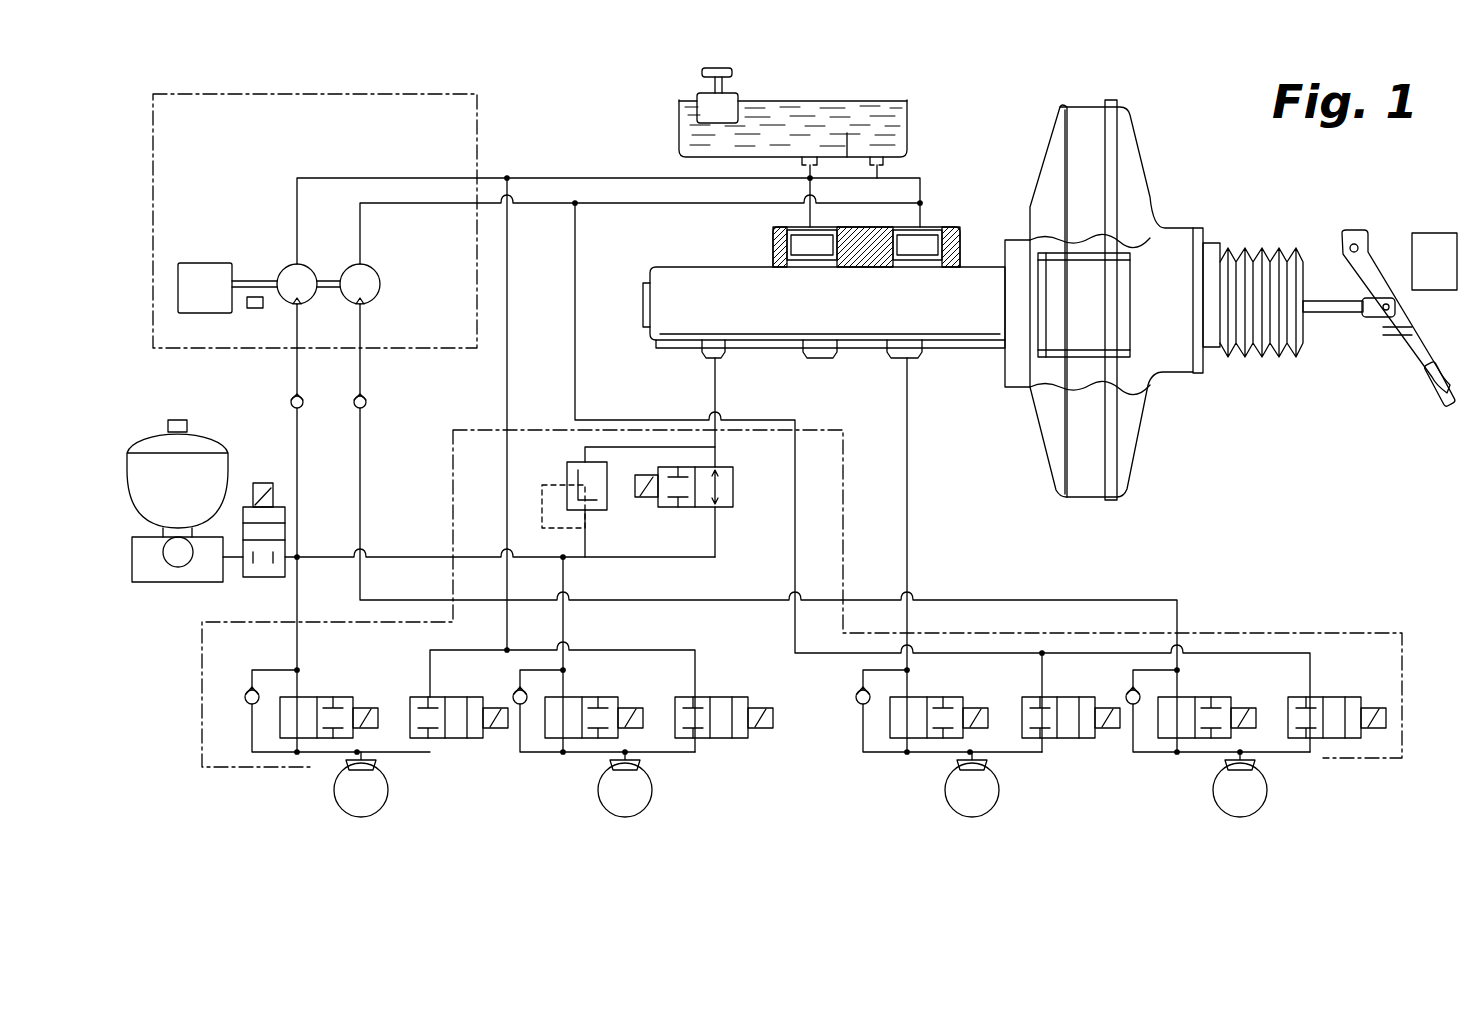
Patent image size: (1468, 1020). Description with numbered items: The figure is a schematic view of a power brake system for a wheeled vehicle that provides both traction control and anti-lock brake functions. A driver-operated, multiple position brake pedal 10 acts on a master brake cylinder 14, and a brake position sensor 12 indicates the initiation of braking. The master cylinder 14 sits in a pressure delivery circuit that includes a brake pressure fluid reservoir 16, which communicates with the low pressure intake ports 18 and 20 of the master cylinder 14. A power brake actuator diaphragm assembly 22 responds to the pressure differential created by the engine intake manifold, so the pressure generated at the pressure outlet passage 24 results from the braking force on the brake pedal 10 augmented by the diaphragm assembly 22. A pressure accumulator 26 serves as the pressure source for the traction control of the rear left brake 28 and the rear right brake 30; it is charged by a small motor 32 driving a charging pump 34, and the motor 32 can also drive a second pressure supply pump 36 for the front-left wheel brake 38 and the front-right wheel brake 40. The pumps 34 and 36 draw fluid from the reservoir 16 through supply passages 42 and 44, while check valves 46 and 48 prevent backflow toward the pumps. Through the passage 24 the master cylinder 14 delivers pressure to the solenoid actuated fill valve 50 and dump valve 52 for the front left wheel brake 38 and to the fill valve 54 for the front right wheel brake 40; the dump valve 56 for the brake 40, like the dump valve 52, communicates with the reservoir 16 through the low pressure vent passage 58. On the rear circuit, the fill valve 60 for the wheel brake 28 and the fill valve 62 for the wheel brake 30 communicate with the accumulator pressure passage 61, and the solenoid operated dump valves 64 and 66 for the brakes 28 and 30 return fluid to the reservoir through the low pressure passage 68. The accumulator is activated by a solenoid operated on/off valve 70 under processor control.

The brake pedal 10 is at (1415, 362).
The brake position sensor 12 is at (1422, 233).
The master brake cylinder 14 is at (960, 228).
The brake pressure fluid reservoir 16 is at (910, 112).
The low pressure intake port 18 is at (900, 238).
The low pressure intake port 20 is at (786, 244).
The power brake actuator diaphragm assembly 22 is at (1100, 142).
The pressure outlet passage 24 is at (908, 427).
The pressure accumulator 26 is at (222, 462).
The rear left brake 28 is at (356, 805).
The rear right brake 30 is at (612, 808).
The motor 32 is at (222, 262).
The charging pump 34 is at (304, 277).
The second pressure supply pump 36 is at (370, 276).
The front-left wheel brake 38 is at (962, 810).
The front-right wheel brake 40 is at (1232, 810).
The supply passage 42 is at (380, 178).
The supply passage 44 is at (450, 205).
The check valve 46 is at (303, 405).
The check valve 48 is at (366, 405).
The solenoid actuated fill valve 50 is at (940, 695).
The solenoid actuated dump valve 52 is at (1075, 695).
The solenoid operated fill valve 54 is at (1212, 695).
The solenoid operated dump valve 56 is at (1342, 695).
The low pressure vent passage 58 is at (797, 525).
The fill valve 60 is at (328, 702).
The accumulator pressure passage 61 is at (398, 556).
The fill valve 62 is at (604, 692).
The solenoid operated dump valve 64 is at (458, 745).
The solenoid operated dump valve 66 is at (720, 742).
The low pressure passage 68 is at (506, 382).
The solenoid operated on/off valve 70 is at (247, 573).